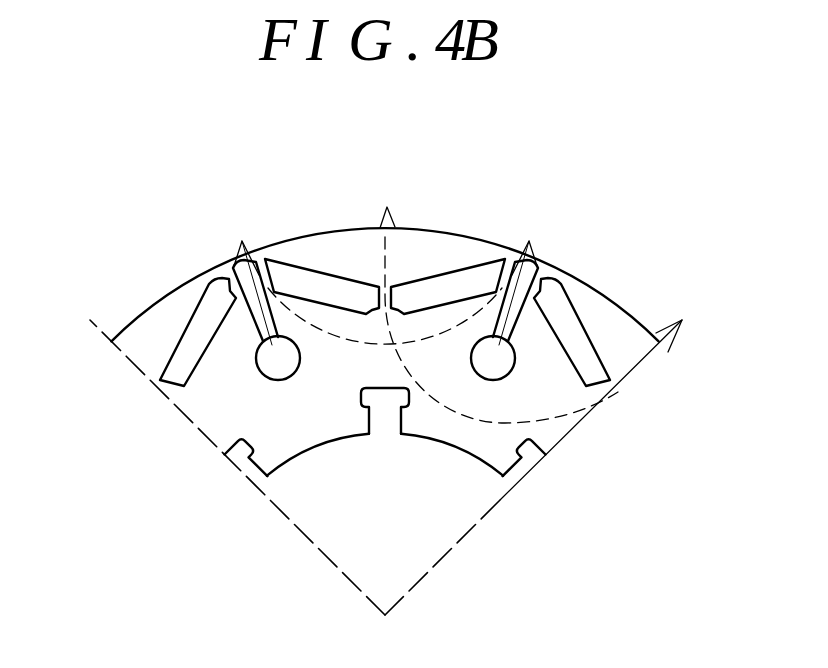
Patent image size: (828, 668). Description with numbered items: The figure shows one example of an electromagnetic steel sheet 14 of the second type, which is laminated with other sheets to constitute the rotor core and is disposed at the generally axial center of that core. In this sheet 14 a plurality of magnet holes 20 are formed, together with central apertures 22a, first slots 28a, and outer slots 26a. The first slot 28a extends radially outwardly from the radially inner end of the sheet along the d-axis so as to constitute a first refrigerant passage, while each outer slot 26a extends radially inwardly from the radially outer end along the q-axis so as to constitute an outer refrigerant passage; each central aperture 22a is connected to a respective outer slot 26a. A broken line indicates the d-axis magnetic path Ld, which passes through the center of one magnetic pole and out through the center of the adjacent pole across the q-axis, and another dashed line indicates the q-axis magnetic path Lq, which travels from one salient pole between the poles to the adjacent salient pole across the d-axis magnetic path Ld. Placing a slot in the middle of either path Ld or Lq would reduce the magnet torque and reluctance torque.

The electromagnetic steel sheet 14 is at (162, 317).
The magnet hole 20 is at (332, 283).
The central aperture 22a is at (497, 358).
The outer slot 26a is at (538, 265).
The first slot 28a is at (385, 418).
The q-axis magnetic path Lq is at (379, 276).
The d-axis magnetic path Ld is at (494, 299).